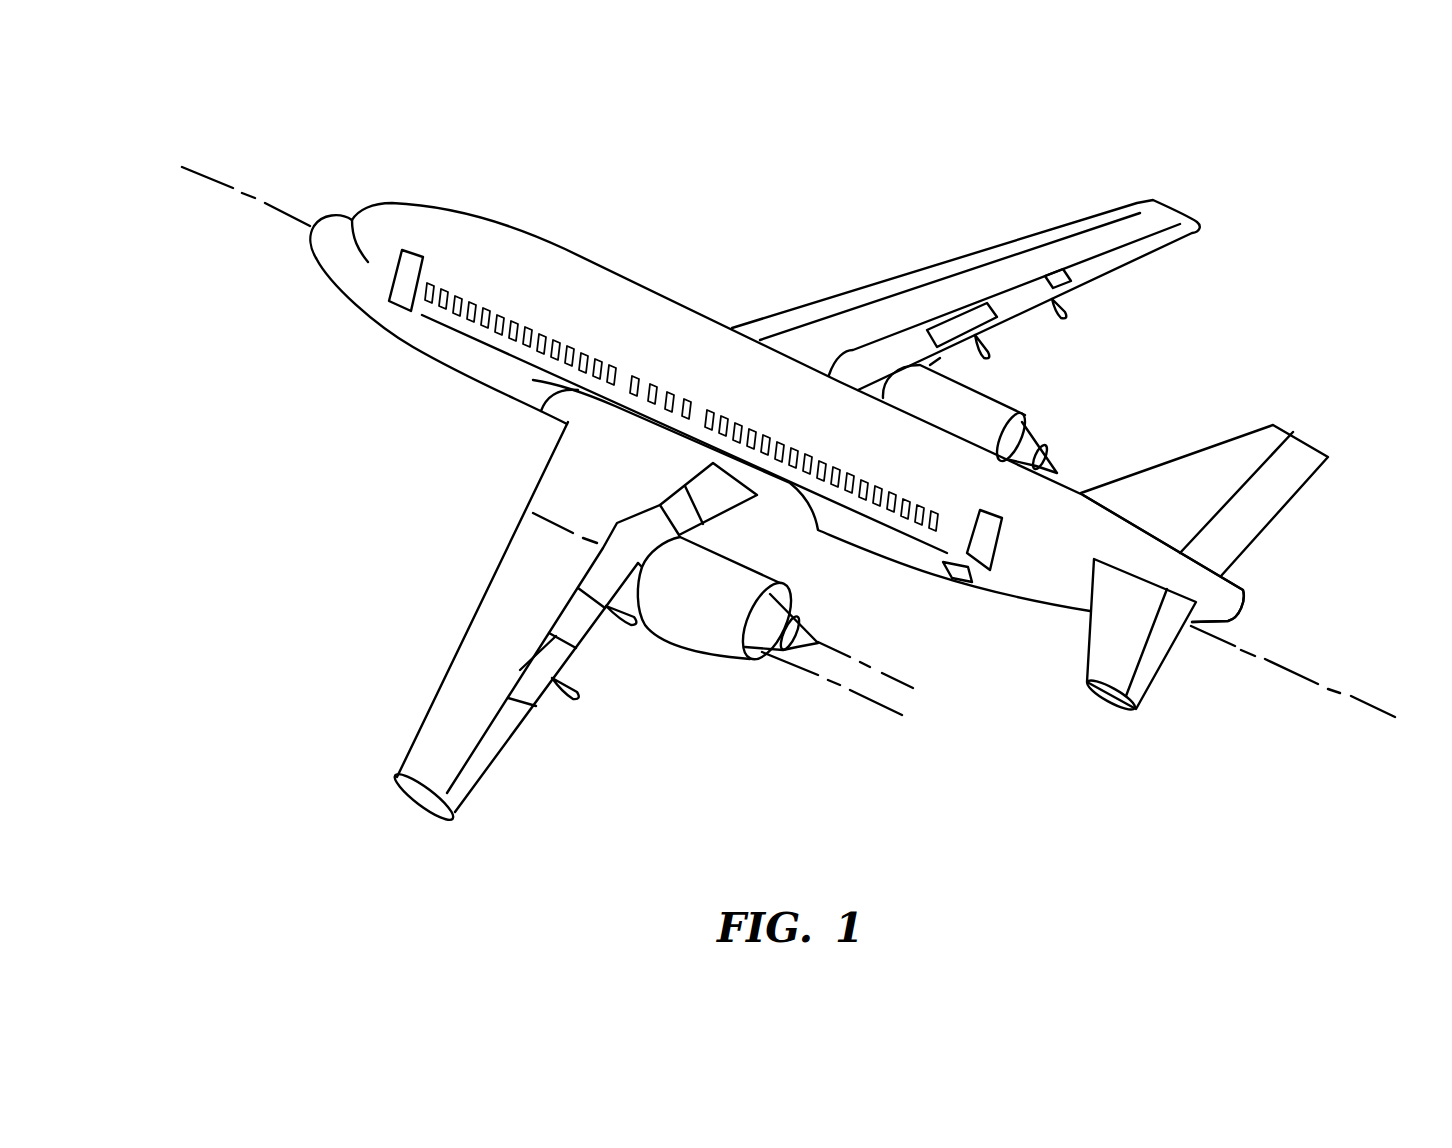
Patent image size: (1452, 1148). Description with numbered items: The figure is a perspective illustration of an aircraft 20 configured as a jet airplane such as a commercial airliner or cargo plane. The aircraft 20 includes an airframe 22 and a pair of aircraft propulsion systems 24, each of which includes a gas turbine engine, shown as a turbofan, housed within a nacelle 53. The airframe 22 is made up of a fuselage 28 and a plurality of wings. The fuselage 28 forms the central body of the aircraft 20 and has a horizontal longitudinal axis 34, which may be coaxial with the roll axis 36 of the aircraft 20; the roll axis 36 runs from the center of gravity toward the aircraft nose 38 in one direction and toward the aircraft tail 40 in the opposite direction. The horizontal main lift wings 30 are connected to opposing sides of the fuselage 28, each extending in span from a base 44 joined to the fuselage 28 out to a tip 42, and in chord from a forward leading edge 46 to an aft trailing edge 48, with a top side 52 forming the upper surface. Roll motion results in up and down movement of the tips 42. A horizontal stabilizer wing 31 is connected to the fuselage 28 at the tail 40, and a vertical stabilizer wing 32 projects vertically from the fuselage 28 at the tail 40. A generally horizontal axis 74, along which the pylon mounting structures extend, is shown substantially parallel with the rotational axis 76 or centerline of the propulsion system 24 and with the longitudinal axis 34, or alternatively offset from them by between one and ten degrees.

The aircraft 20 is at (783, 476).
The airframe 22 is at (566, 248).
The aircraft propulsion system 24 is at (698, 660).
The fuselage 28 is at (630, 290).
The main wing 30 is at (764, 546).
The horizontal stabilizer wing 31 is at (1175, 677).
The vertical stabilizer wing 32 is at (1290, 521).
The longitudinal axis 34 is at (783, 442).
The roll axis 36 is at (212, 182).
The aircraft nose 38 is at (307, 245).
The aircraft tail 40 is at (1244, 610).
The tip 42 is at (416, 812).
The base 44 is at (541, 413).
The leading edge 46 is at (426, 723).
The trailing edge 48 is at (500, 762).
The top side 52 is at (490, 687).
The nacelle 53 is at (740, 572).
The horizontal axis 74 is at (862, 702).
The rotational axis 76 is at (900, 685).